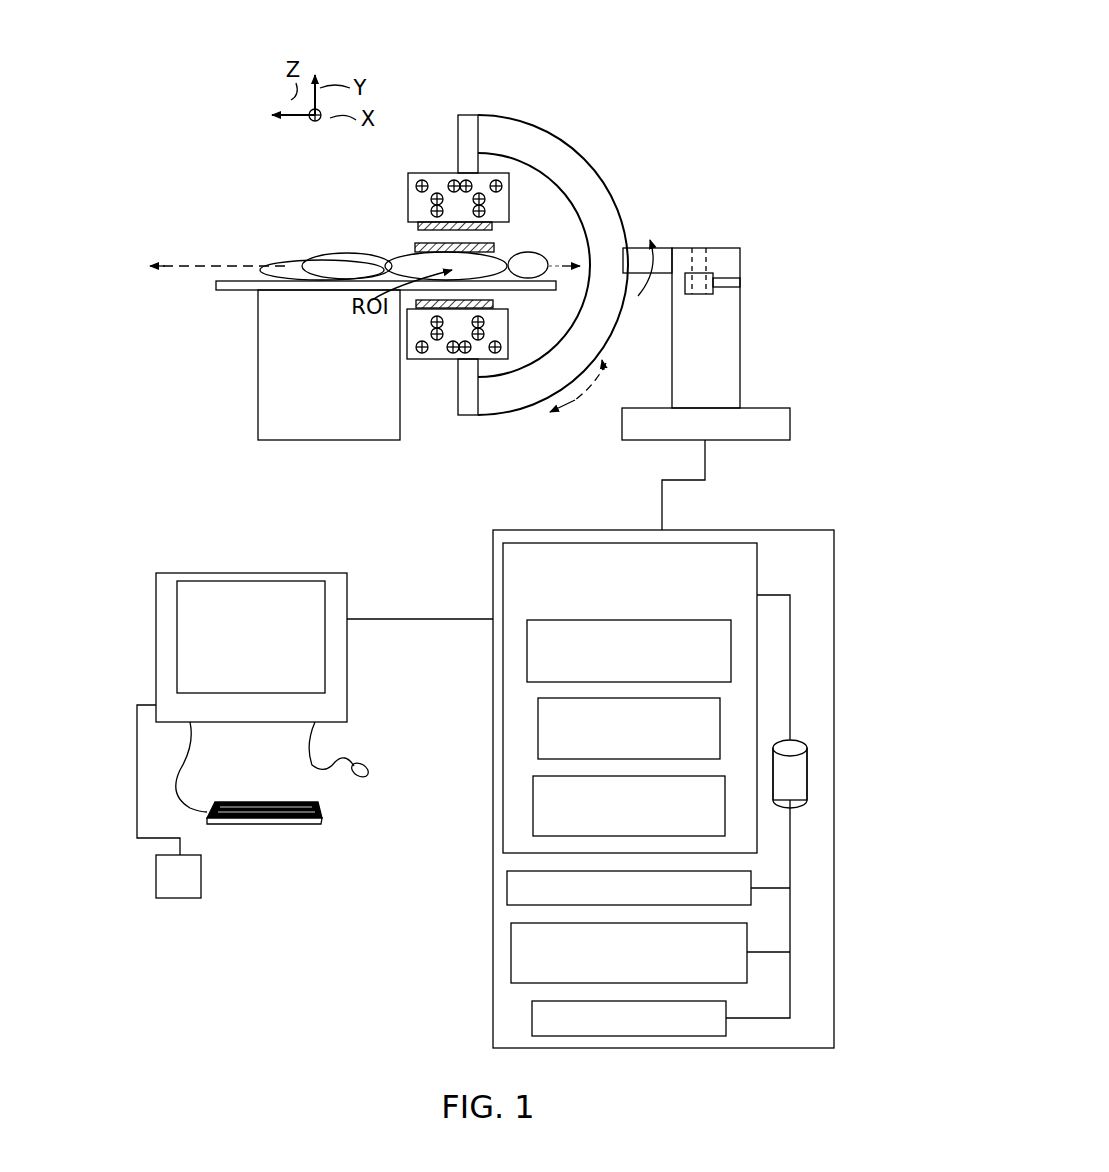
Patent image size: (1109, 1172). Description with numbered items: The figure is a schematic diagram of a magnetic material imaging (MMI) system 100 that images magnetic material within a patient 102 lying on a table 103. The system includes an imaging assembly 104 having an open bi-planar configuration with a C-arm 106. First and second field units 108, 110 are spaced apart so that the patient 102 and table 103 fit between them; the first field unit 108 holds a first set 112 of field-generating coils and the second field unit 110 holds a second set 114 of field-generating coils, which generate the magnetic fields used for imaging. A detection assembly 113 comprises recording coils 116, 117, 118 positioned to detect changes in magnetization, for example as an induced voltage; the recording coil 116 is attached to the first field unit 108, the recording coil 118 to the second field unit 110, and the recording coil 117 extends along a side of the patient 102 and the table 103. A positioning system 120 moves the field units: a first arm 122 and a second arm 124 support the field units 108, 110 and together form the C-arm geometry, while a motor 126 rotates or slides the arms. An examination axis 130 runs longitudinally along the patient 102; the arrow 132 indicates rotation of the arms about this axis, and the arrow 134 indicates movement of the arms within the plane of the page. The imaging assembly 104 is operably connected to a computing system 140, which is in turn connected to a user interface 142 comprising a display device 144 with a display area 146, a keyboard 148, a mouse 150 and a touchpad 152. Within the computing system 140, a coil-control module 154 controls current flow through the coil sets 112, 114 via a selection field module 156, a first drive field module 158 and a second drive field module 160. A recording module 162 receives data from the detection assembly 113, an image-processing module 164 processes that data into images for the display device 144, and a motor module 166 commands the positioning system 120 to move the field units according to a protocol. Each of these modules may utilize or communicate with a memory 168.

The MMI system 100 is at (758, 60).
The patient 102 is at (525, 252).
The table 103 is at (222, 292).
The imaging assembly 104 is at (665, 150).
The C-arm 106 is at (540, 120).
The first field unit 108 is at (428, 162).
The second field unit 110 is at (430, 370).
The first set of field-generating coils 112 is at (426, 179).
The detection assembly 113 is at (382, 246).
The second set of field-generating coils 114 is at (452, 334).
The recording coil 116 is at (420, 228).
The recording coil 117 is at (478, 245).
The recording coil 118 is at (490, 300).
The positioning system 120 is at (727, 313).
The first arm 122 is at (590, 180).
The second arm 124 is at (498, 425).
The motor 126 is at (698, 296).
The examination axis 130 is at (222, 264).
The arrow 132 is at (652, 248).
The arrow 134 is at (590, 392).
The computing system 140 is at (783, 517).
The user interface 142 is at (288, 548).
The display device 144 is at (347, 588).
The display area 146 is at (251, 637).
The keyboard 148 is at (323, 810).
The mouse 150 is at (369, 768).
The touchpad 152 is at (178, 903).
The coil-control module 154 is at (758, 568).
The selection field module 156 is at (527, 651).
The first drive field module 158 is at (538, 729).
The second drive field module 160 is at (533, 806).
The recording module 162 is at (507, 890).
The image-processing module 164 is at (511, 954).
The motor module 166 is at (532, 1020).
The memory 168 is at (807, 773).